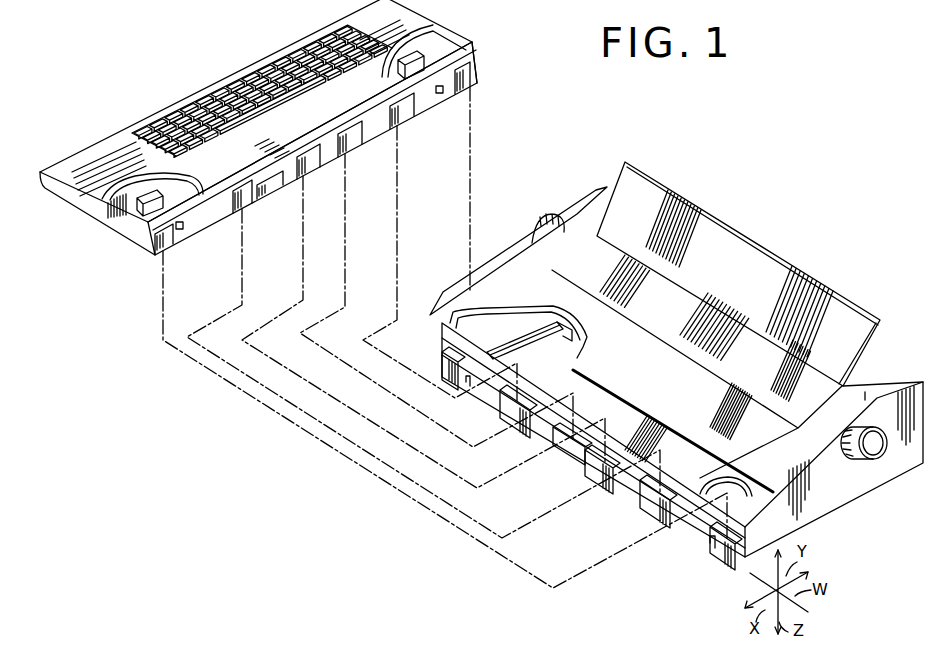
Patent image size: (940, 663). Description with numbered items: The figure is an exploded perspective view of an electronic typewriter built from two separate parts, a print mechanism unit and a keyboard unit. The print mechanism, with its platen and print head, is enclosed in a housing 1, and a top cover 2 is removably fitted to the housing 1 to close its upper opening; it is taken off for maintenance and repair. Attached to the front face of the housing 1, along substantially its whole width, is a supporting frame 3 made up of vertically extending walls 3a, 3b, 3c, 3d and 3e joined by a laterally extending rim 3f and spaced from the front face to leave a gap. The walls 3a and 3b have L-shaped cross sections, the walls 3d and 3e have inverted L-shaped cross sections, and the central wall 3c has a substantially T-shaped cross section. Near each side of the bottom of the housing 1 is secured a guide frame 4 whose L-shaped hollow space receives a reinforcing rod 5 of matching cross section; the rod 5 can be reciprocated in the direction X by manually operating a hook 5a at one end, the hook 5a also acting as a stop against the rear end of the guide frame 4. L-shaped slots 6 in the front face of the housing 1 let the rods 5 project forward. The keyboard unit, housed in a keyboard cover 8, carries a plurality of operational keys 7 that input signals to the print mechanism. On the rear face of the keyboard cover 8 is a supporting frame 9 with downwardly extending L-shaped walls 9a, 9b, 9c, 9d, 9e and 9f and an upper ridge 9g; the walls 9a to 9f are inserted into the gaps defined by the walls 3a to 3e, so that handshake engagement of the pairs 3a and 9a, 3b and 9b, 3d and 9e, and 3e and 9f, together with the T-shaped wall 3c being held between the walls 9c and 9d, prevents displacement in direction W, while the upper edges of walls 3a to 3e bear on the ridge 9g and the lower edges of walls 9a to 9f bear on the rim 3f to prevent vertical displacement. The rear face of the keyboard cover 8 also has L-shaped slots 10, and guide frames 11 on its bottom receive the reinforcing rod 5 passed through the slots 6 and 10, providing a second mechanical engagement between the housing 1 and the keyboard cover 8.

The housing 1 is at (843, 508).
The top cover 2 is at (807, 446).
The supporting frame 3 is at (620, 492).
The vertically extending wall 3a is at (443, 362).
The vertically extending wall 3b is at (512, 410).
The central wall 3c is at (583, 461).
The vertically extending wall 3d is at (648, 505).
The vertically extending wall 3e is at (716, 556).
The laterally extending rim 3f is at (555, 450).
The guide frame 4 is at (498, 347).
The reinforcing rod 5 is at (545, 379).
The hook 5a is at (562, 338).
The L-shaped slot 6 is at (466, 383).
The operational keys 7 is at (210, 95).
The keyboard cover 8 is at (113, 228).
The supporting frame 9 is at (273, 190).
The downwardly extending wall 9a is at (472, 82).
The downwardly extending wall 9b is at (404, 118).
The downwardly extending wall 9c is at (352, 140).
The downwardly extending wall 9d is at (306, 172).
The downwardly extending wall 9e is at (244, 208).
The downwardly extending wall 9f is at (167, 250).
The upper ridge 9g is at (478, 52).
The L-shaped slot 10 is at (183, 227).
The guide frame 11 is at (145, 190).